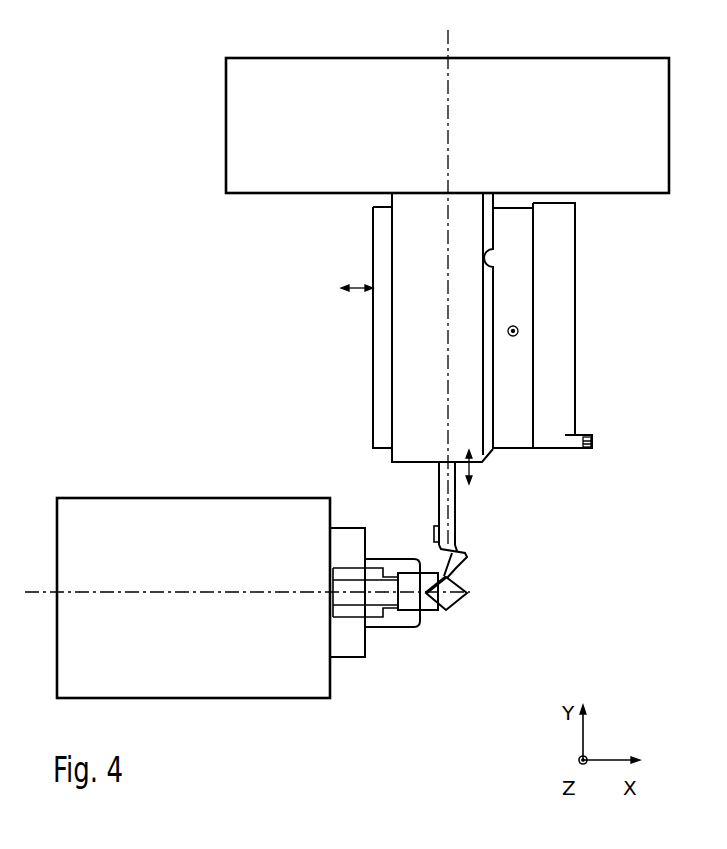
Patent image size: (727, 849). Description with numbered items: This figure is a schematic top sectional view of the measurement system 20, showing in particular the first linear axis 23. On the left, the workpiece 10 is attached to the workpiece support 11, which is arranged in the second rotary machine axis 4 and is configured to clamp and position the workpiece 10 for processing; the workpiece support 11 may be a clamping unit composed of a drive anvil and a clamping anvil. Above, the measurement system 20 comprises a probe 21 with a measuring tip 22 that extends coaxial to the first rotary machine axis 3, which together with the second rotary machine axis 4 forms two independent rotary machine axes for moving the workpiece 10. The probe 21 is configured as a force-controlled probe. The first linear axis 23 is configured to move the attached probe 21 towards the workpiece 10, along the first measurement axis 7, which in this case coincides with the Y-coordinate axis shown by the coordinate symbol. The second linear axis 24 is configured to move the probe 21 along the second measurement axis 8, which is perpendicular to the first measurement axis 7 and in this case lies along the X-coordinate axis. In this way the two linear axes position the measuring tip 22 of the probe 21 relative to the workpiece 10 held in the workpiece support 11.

The first rotary machine axis 3 is at (452, 96).
The second rotary machine axis 4 is at (249, 582).
The first measurement axis 7 is at (471, 472).
The second measurement axis 8 is at (350, 291).
The workpiece 10 is at (463, 610).
The workpiece support 11 is at (428, 612).
The measurement system 20 is at (511, 458).
The probe 21 is at (470, 596).
The measuring tip 22 is at (443, 577).
The first linear axis 23 is at (410, 394).
The second linear axis 24 is at (365, 208).